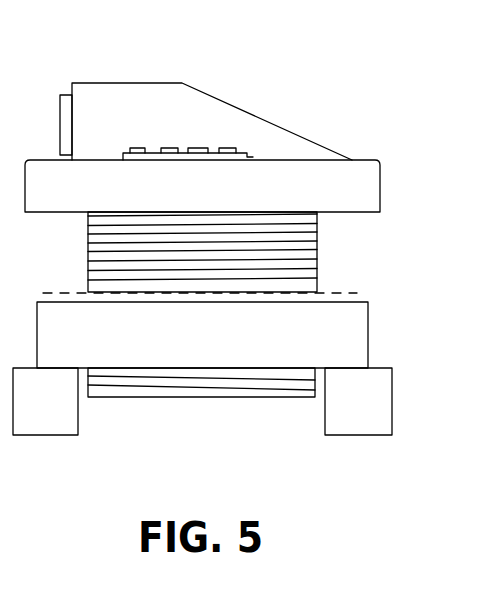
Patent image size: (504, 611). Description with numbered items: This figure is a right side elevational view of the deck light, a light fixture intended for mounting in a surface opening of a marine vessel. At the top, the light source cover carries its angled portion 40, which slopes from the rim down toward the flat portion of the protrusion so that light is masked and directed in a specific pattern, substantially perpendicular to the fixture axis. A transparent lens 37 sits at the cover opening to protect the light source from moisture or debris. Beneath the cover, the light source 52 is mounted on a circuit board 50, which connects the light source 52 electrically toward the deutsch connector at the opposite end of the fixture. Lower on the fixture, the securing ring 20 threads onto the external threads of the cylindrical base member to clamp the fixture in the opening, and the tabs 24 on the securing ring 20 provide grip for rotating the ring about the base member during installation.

The securing ring 20 is at (353, 333).
The tabs 24 is at (378, 407).
The transparent lens 37 is at (60, 118).
The angled portion 40 is at (240, 108).
The circuit board 50 is at (228, 163).
The light source 52 is at (143, 145).